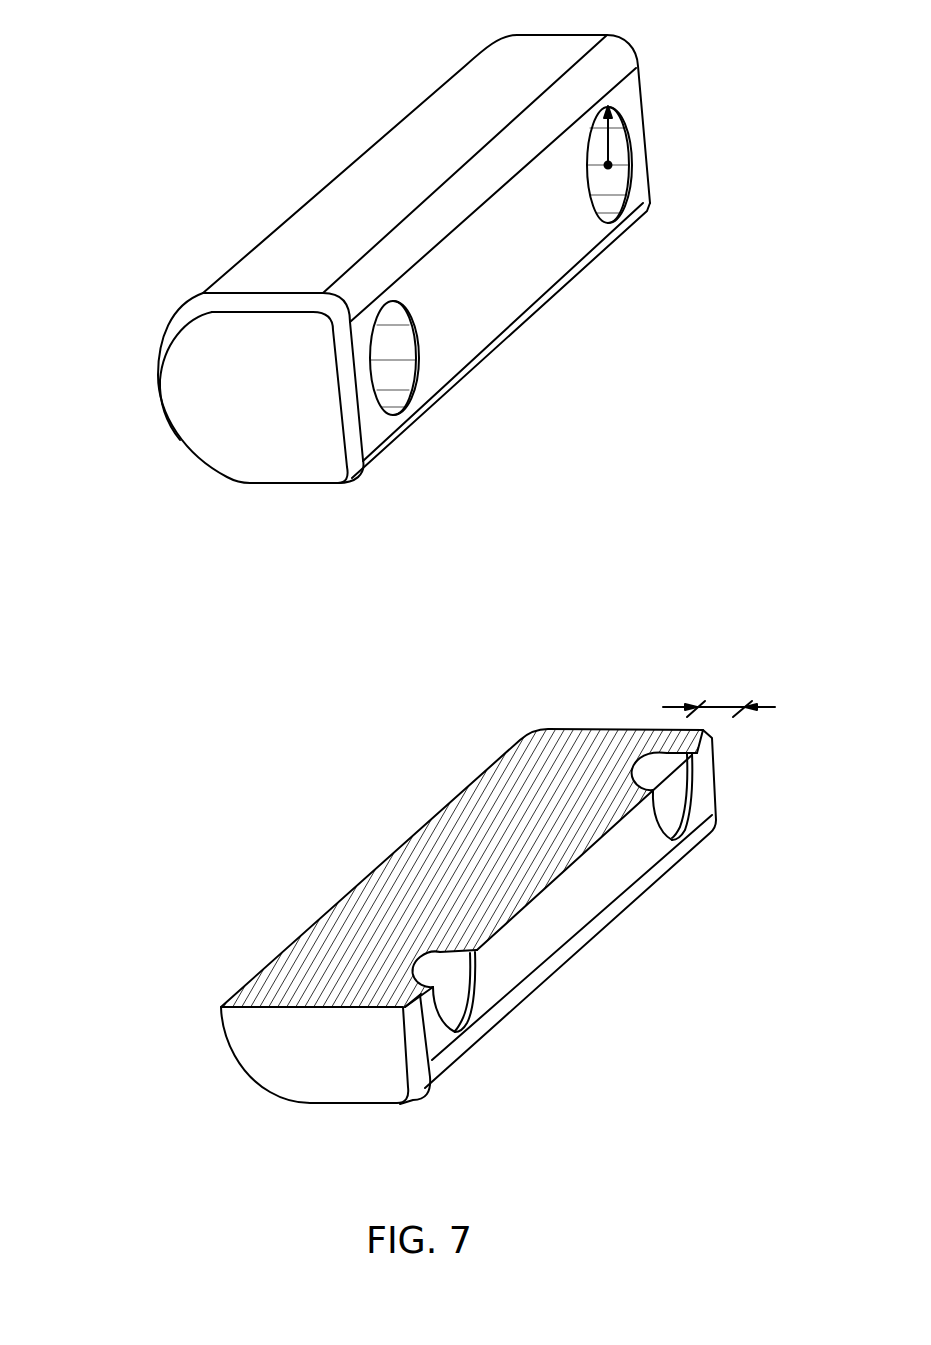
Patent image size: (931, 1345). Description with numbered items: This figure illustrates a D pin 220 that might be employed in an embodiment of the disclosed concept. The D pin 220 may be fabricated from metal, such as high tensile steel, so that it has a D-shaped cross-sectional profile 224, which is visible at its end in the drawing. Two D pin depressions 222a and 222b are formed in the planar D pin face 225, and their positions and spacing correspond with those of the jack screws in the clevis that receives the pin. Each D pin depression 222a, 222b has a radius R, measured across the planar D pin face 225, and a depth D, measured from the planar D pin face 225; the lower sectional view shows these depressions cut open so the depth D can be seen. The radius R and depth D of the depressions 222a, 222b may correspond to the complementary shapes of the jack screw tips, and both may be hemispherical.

The D pin 220 is at (358, 190).
The D pin depression 222a is at (383, 388).
The D pin depression 222b is at (602, 195).
The D-shaped cross-sectional profile 224 is at (222, 394).
The planar D pin face 225 is at (522, 288).
The radius R is at (620, 146).
The depth D is at (719, 700).